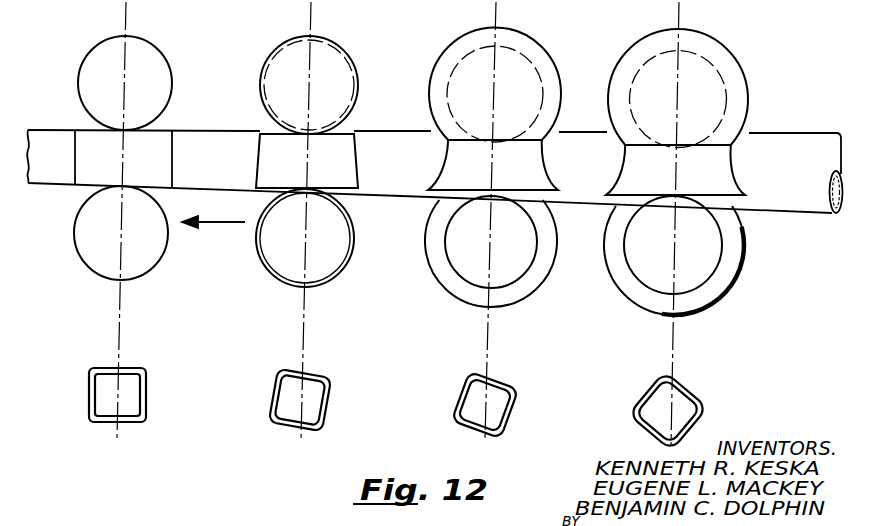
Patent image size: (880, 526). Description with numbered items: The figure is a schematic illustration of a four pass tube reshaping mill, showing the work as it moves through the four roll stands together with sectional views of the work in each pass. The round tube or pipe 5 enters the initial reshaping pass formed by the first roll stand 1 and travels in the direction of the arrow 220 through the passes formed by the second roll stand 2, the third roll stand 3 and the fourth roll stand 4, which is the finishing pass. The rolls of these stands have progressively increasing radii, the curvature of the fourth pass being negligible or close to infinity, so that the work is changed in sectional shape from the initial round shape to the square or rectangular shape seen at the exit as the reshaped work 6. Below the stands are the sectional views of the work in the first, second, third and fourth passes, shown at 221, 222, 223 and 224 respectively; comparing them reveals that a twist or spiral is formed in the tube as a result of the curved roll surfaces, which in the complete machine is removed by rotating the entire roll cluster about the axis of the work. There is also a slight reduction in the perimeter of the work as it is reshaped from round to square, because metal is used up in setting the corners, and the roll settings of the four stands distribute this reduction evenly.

The first roll stand 1 is at (751, 233).
The second roll stand 2 is at (562, 118).
The third roll stand 3 is at (356, 122).
The fourth roll stand 4 is at (169, 121).
The round tube or pipe 5 is at (806, 214).
The reshaped square or rectangular work 6 is at (42, 178).
The arrow 220 is at (208, 224).
The sectional view of work in first pass 221 is at (706, 397).
The sectional view of work in second pass 222 is at (520, 395).
The sectional view of work in third pass 223 is at (332, 380).
The sectional view of work in fourth pass 224 is at (146, 378).